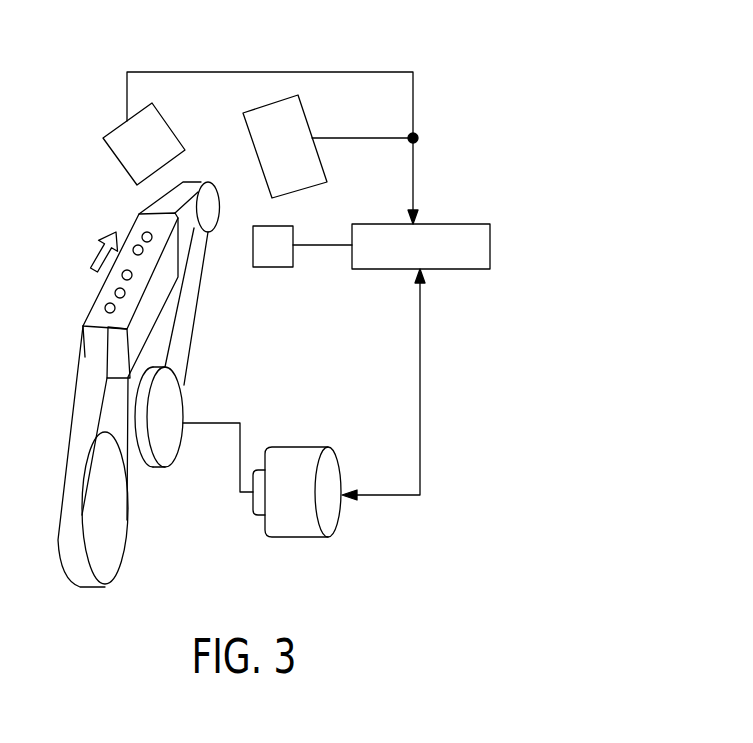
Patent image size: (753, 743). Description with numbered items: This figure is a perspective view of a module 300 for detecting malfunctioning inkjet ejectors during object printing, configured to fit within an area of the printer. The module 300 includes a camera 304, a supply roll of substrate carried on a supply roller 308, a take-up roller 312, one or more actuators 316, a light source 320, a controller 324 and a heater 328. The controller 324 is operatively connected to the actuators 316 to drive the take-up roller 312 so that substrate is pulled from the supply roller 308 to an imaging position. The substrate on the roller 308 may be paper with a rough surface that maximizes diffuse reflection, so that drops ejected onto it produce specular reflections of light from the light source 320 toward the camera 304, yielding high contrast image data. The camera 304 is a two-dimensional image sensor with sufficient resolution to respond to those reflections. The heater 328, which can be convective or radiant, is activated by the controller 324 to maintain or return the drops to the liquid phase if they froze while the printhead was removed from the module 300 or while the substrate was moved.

The module 300 is at (576, 74).
The camera 304 is at (310, 112).
The supply roller 308 is at (122, 558).
The take-up roller 312 is at (175, 463).
The actuators 316 is at (343, 472).
The light source 320 is at (165, 118).
The controller 324 is at (462, 224).
The heater 328 is at (277, 267).